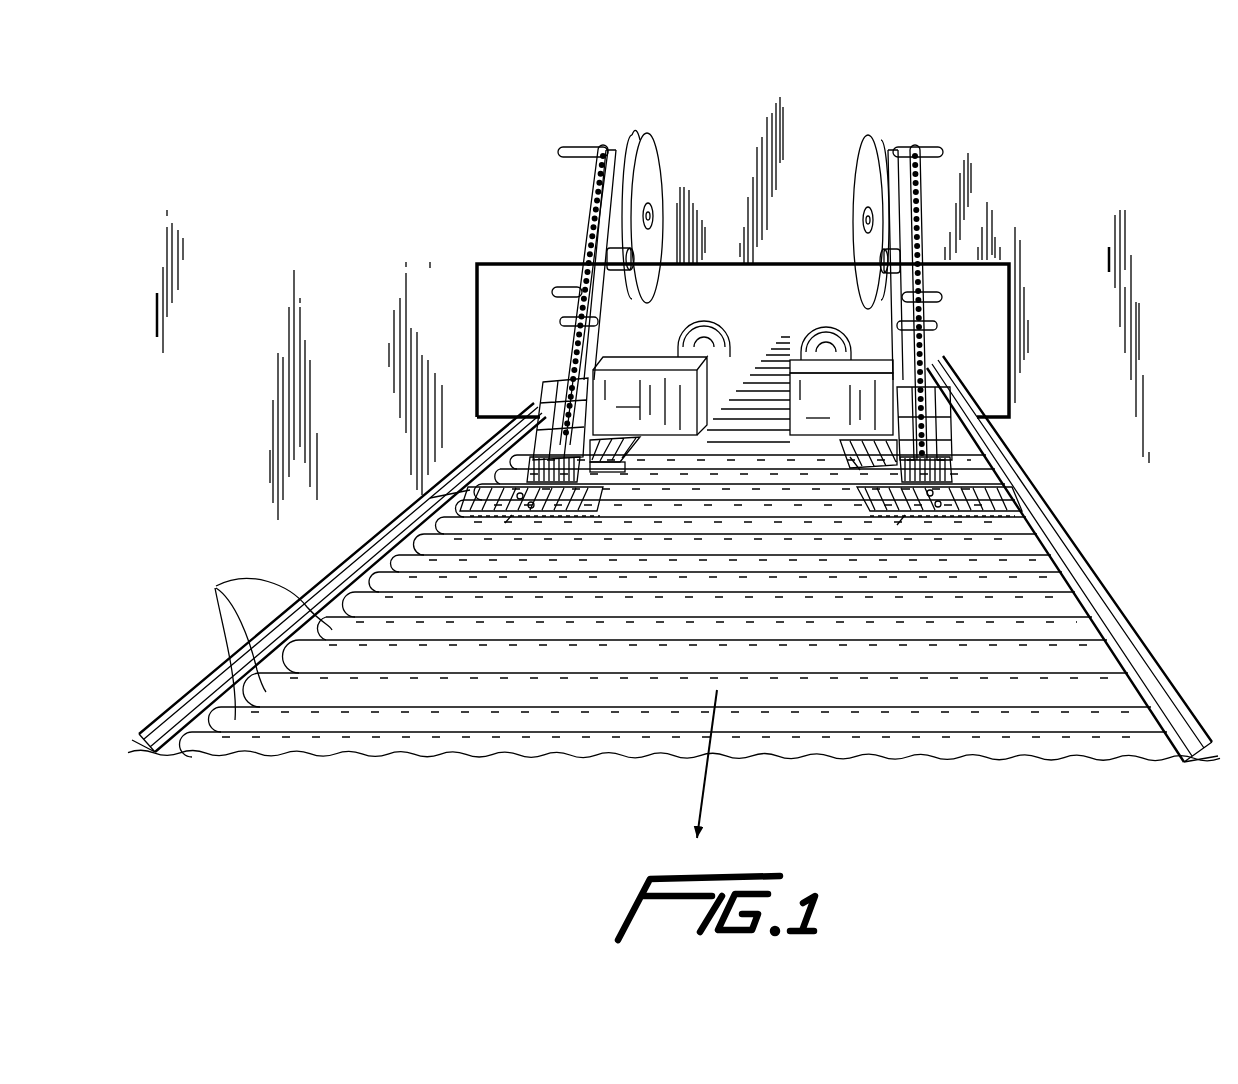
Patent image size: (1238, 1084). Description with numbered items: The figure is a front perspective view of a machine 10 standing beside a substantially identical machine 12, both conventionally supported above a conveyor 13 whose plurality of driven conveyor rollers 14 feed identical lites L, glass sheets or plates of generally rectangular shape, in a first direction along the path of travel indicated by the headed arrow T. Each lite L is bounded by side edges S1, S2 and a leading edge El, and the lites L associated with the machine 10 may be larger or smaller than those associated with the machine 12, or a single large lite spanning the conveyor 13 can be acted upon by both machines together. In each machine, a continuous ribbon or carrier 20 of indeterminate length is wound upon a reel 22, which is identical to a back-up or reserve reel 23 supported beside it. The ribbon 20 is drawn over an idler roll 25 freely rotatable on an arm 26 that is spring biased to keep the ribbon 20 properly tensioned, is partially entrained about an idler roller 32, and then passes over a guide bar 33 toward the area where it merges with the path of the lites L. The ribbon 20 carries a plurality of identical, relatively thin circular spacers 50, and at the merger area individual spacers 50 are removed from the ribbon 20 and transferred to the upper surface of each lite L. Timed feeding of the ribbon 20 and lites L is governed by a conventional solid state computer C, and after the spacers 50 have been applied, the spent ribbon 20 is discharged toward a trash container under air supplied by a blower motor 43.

The machine 10 is at (997, 136).
The machine 12 is at (521, 156).
The conveyor 13 is at (1083, 603).
The conveyor rollers 14 is at (218, 586).
The ribbon or carrier 20 is at (586, 204).
The reel 22 is at (617, 322).
The back-up or reserve reel 23 is at (657, 172).
The idler roll 25 is at (581, 147).
The arm 26 is at (623, 170).
The idler roller 32 is at (553, 380).
The guide bar 33 is at (545, 397).
The blower motor 43 is at (718, 322).
The spacers 50 is at (560, 292).
The computer C is at (743, 396).
The lites L is at (500, 450).
The side edge S1 is at (850, 457).
The side edge S2 is at (655, 467).
The leading edge El is at (897, 525).
The direction of travel T is at (700, 790).